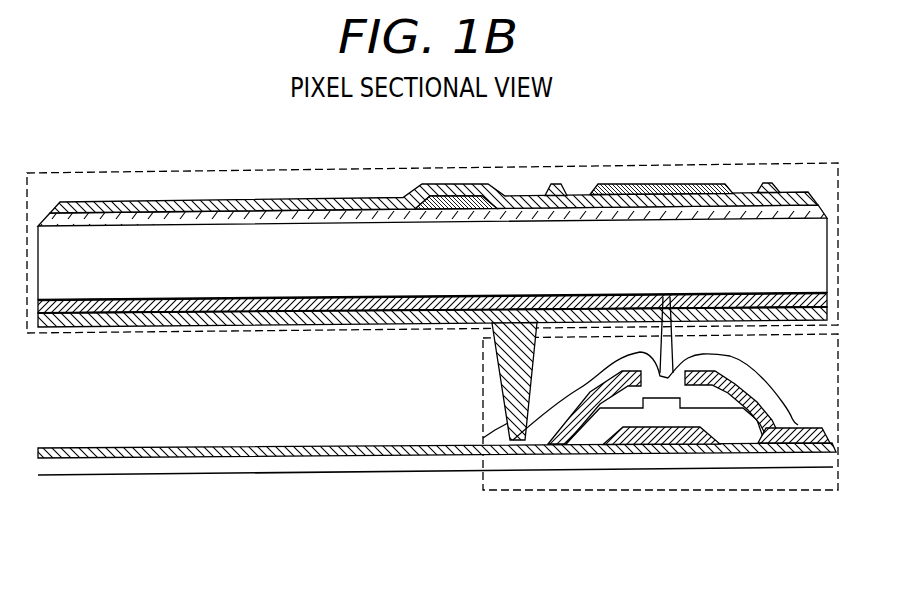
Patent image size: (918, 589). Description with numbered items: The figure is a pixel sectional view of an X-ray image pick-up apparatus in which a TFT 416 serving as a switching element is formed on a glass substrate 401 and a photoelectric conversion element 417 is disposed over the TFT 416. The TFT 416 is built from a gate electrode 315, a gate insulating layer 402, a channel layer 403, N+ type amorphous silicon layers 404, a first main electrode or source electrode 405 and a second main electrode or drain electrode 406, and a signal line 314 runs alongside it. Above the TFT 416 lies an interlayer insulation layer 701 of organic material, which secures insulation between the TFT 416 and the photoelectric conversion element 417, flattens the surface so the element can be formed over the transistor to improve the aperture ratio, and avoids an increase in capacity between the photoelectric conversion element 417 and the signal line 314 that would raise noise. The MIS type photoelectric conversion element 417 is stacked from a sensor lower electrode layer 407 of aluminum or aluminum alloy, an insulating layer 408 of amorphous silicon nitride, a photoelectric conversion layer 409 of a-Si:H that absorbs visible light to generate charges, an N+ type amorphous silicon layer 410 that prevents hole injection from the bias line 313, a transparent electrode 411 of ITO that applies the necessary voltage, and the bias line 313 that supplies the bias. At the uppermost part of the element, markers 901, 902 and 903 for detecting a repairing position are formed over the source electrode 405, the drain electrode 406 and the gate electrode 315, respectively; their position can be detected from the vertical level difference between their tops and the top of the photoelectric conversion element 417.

The photoelectric conversion element 417 is at (78, 170).
The TFT 416 is at (838, 490).
The photoelectric conversion layer 409 is at (237, 252).
The N+ type amorphous silicon layer 410 is at (355, 218).
The transparent electrode 411 is at (632, 200).
The bias line 313 is at (455, 197).
The marker 901 is at (555, 185).
The marker 902 is at (770, 184).
The marker 903 is at (708, 185).
The insulating layer 408 is at (157, 313).
The sensor lower electrode layer 407 is at (357, 320).
The interlayer insulation layer 701 is at (82, 432).
The glass substrate 401 is at (173, 467).
The gate electrode 315 is at (663, 438).
The gate insulating layer 402 is at (598, 447).
The channel layer 403 is at (730, 432).
The signal line 314 is at (805, 428).
The first main electrode (source electrode) 405 is at (610, 354).
The second main electrode (drain electrode) 406 is at (730, 355).
The N+ type amorphous silicon layer 404 is at (663, 297).